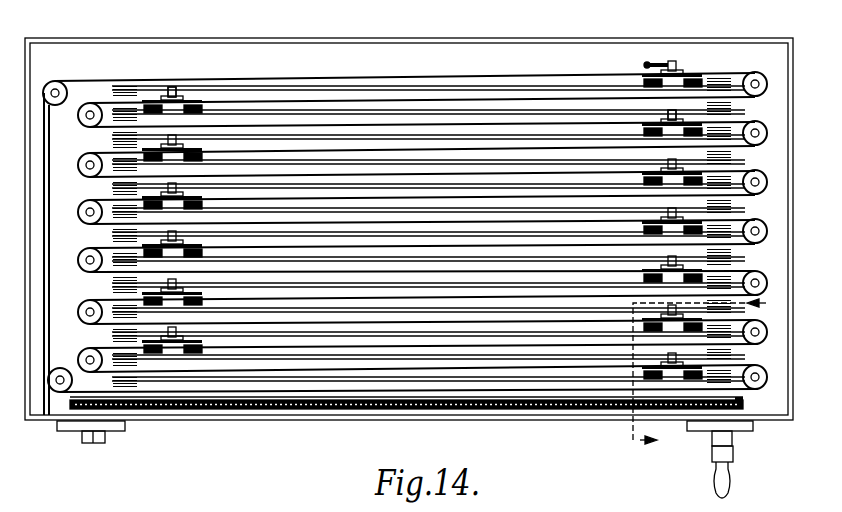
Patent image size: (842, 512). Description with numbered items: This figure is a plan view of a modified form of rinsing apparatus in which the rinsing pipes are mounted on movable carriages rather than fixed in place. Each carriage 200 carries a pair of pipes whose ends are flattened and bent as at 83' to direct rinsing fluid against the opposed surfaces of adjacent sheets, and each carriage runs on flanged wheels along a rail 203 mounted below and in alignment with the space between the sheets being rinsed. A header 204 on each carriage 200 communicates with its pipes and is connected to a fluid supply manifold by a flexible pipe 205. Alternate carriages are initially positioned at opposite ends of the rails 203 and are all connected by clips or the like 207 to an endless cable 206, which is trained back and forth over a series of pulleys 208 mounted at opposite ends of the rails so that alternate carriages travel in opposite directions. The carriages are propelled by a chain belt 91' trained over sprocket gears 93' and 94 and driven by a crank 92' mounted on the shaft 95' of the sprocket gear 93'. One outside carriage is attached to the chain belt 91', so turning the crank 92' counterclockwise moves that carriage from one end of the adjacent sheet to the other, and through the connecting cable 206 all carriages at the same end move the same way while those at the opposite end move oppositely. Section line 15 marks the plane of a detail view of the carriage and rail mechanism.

The section line 15 is at (688, 443).
The flattened bent pipe ends 83' is at (433, 82).
The chain belt 91' is at (406, 422).
The crank 92' is at (746, 475).
The sprocket gear 93' is at (82, 433).
The sprocket gear 94 is at (746, 399).
The shaft 95' is at (732, 441).
The carriage 200 is at (112, 188).
The rail 203 is at (343, 135).
The header 204 is at (673, 61).
The flexible pipe 205 is at (656, 63).
The endless cable 206 is at (420, 126).
The clip 207 is at (190, 100).
The pulley 208 is at (88, 105).